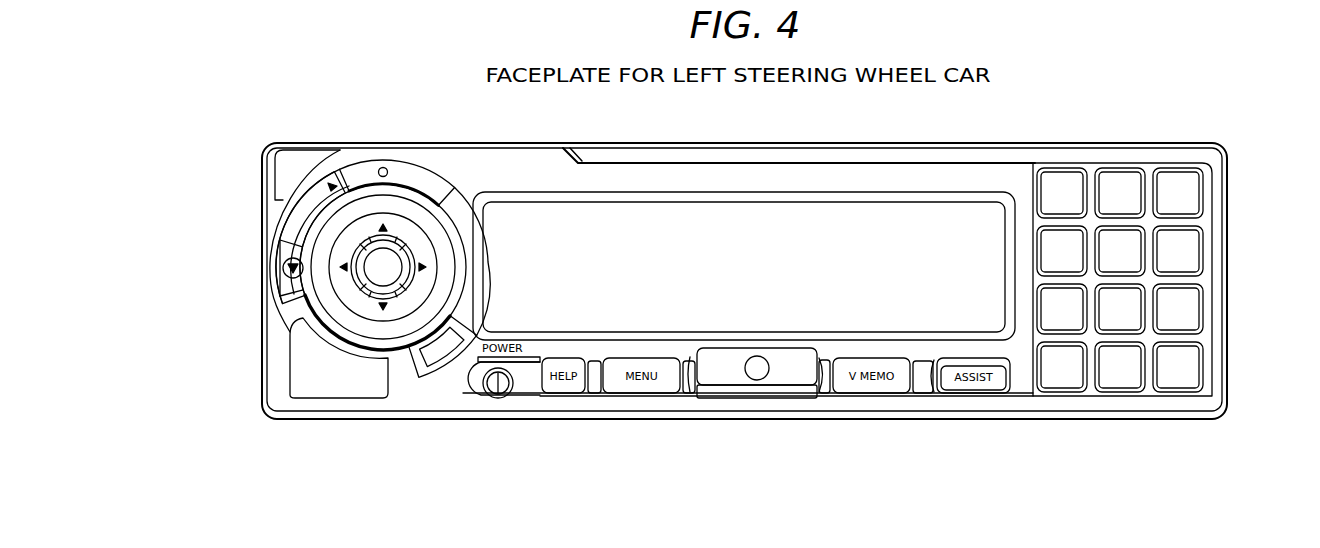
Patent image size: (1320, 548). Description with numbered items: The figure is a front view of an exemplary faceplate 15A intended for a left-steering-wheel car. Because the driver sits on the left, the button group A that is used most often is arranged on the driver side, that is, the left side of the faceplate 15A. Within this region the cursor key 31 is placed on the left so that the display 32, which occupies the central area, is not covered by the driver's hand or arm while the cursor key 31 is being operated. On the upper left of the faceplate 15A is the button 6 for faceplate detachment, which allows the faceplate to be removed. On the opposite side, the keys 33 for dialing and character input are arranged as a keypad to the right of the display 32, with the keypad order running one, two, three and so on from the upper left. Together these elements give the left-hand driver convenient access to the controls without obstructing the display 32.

The faceplate 15A is at (1087, 118).
The button for faceplate detachment 6 is at (303, 158).
The cursor key 31 is at (386, 236).
The display 32 is at (908, 228).
The keys for dialing and character input 33 is at (1224, 263).
The button group A is at (260, 266).